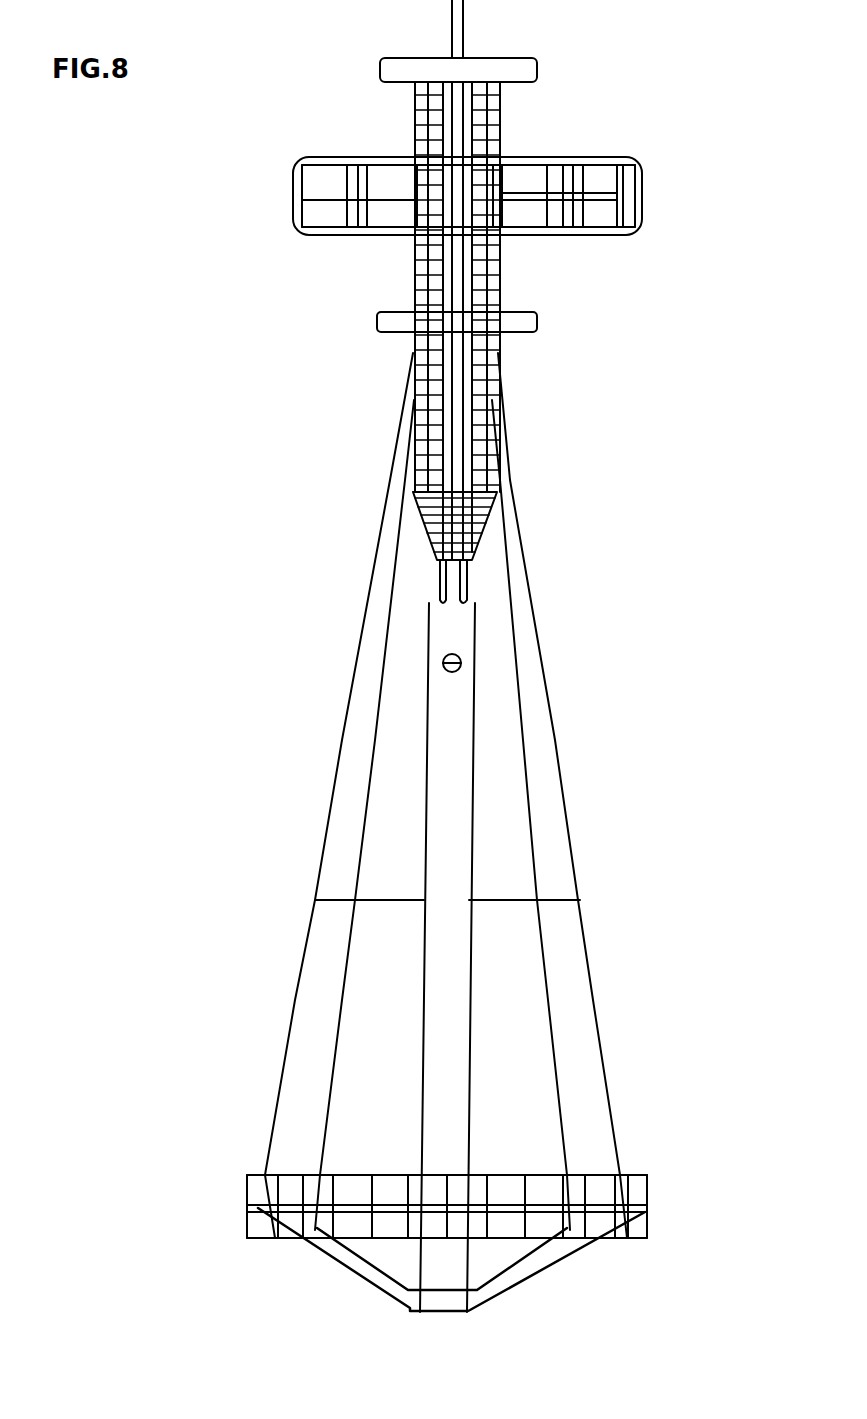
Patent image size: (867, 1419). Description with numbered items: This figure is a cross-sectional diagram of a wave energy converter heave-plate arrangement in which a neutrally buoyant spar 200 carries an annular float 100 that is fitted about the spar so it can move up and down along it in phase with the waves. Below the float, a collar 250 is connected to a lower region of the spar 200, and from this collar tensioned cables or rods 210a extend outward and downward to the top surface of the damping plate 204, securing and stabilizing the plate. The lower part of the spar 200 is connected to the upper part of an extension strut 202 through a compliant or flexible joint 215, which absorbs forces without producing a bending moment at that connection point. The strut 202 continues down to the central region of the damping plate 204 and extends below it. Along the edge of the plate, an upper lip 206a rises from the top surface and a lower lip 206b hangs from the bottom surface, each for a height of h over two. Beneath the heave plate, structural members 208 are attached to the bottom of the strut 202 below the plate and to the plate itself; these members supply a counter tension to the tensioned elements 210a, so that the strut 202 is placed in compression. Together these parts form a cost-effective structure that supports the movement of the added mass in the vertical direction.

The annular float 100 is at (642, 202).
The collar 250 is at (537, 322).
The spar 200 is at (493, 458).
The compliant/flexible joint 215 is at (472, 560).
The extension strut 202 is at (470, 821).
The tensioned element 210a is at (603, 1052).
The damping plate 204 is at (257, 1210).
The upper lip 206a is at (647, 1176).
The lower lip 206b is at (647, 1222).
The structural member 208 is at (527, 1285).